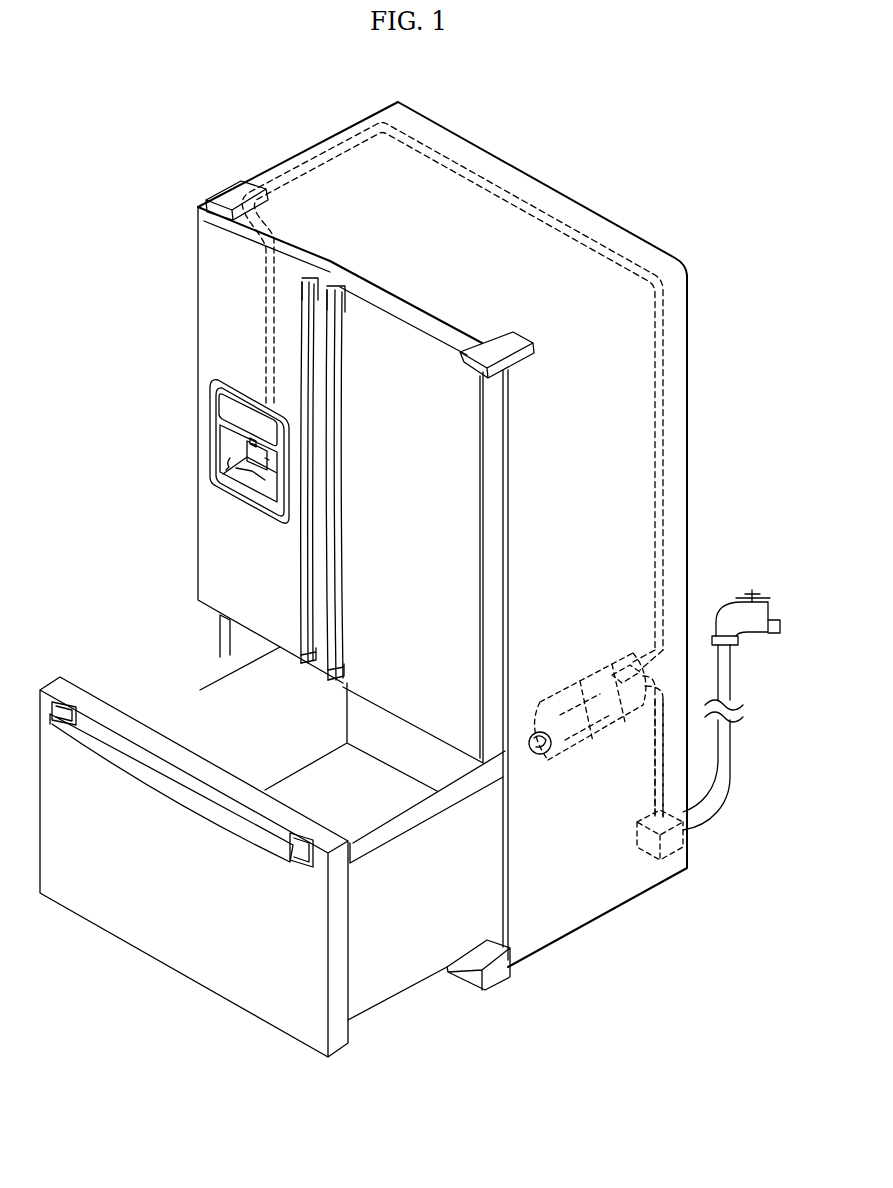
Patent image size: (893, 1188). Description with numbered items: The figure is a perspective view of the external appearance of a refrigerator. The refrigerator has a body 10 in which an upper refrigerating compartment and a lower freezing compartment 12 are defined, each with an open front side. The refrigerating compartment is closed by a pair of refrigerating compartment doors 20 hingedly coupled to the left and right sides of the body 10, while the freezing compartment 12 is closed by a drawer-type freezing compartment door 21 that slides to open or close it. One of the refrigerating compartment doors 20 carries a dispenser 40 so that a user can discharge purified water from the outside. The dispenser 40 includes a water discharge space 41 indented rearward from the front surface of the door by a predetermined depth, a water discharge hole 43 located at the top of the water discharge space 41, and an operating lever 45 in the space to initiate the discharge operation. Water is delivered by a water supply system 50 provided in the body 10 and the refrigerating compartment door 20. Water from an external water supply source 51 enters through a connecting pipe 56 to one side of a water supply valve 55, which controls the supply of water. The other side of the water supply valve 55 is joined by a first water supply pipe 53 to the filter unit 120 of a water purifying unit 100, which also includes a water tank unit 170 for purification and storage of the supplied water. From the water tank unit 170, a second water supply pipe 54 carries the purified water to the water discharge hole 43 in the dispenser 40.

The body 10 is at (488, 165).
The freezing compartment 12 is at (268, 675).
The refrigerating compartment door 20 is at (212, 568).
The freezing compartment door 21 is at (118, 930).
The dispenser 40 is at (198, 461).
The water discharge space 41 is at (227, 468).
The water discharge hole 43 is at (247, 443).
The operating lever 45 is at (247, 477).
The water supply system 50 is at (593, 237).
The external water supply source 51 is at (745, 597).
The first water supply pipe 53 is at (656, 755).
The second water supply pipe 54 is at (663, 452).
The water supply valve 55 is at (677, 838).
The connecting pipe 56 is at (732, 735).
The water purifying unit 100 is at (586, 710).
The filter unit 120 is at (570, 737).
The water tank unit 170 is at (603, 697).